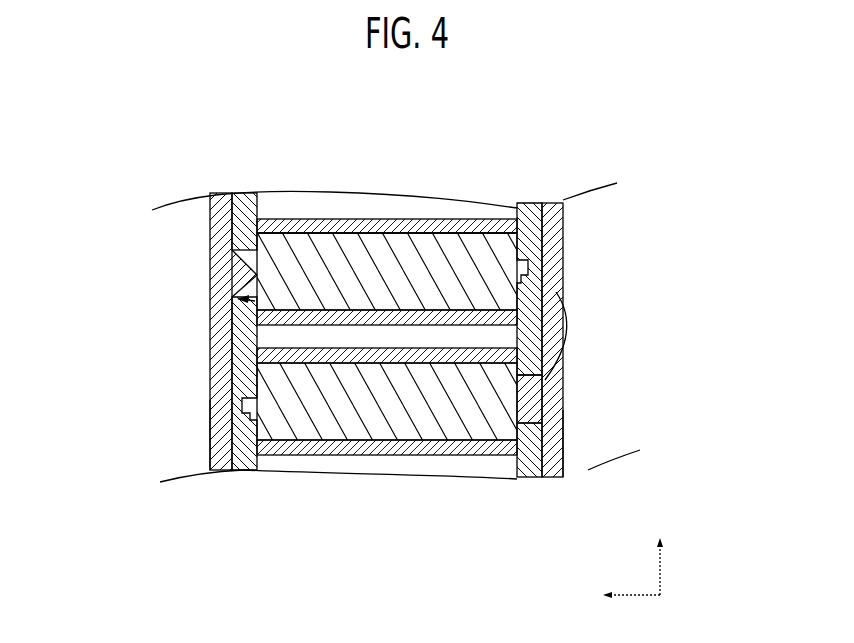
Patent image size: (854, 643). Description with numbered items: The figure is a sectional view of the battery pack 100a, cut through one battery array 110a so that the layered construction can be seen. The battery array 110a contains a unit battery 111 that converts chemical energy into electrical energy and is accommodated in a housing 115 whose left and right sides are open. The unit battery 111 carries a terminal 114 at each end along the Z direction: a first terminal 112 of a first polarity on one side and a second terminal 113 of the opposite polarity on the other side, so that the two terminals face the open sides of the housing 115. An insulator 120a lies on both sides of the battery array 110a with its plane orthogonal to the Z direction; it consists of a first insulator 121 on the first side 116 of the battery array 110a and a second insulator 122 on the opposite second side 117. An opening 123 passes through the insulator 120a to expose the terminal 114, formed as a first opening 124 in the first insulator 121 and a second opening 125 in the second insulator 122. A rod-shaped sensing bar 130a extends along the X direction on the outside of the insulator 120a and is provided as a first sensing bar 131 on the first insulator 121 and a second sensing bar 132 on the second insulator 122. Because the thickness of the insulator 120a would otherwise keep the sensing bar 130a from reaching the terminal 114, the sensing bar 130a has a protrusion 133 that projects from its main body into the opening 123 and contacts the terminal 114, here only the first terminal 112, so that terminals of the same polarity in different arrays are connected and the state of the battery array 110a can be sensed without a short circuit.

The battery pack 100a is at (87, 97).
The battery array 110a is at (487, 208).
The unit battery 111 is at (293, 440).
The first terminal 112 is at (530, 377).
The second terminal 113 is at (556, 292).
The terminal 114 is at (645, 280).
The housing 115 is at (285, 218).
The first side 116 is at (540, 247).
The second side 117 is at (210, 303).
The insulator 120a is at (122, 345).
The first insulator 121 is at (535, 347).
The second insulator 122 is at (208, 355).
The opening 123 is at (333, 123).
The first opening 124 is at (448, 240).
The second opening 125 is at (258, 257).
The sensing bar 130a is at (345, 565).
The first sensing bar 131 is at (582, 459).
The second sensing bar 132 is at (198, 432).
The protrusion 133 is at (552, 403).